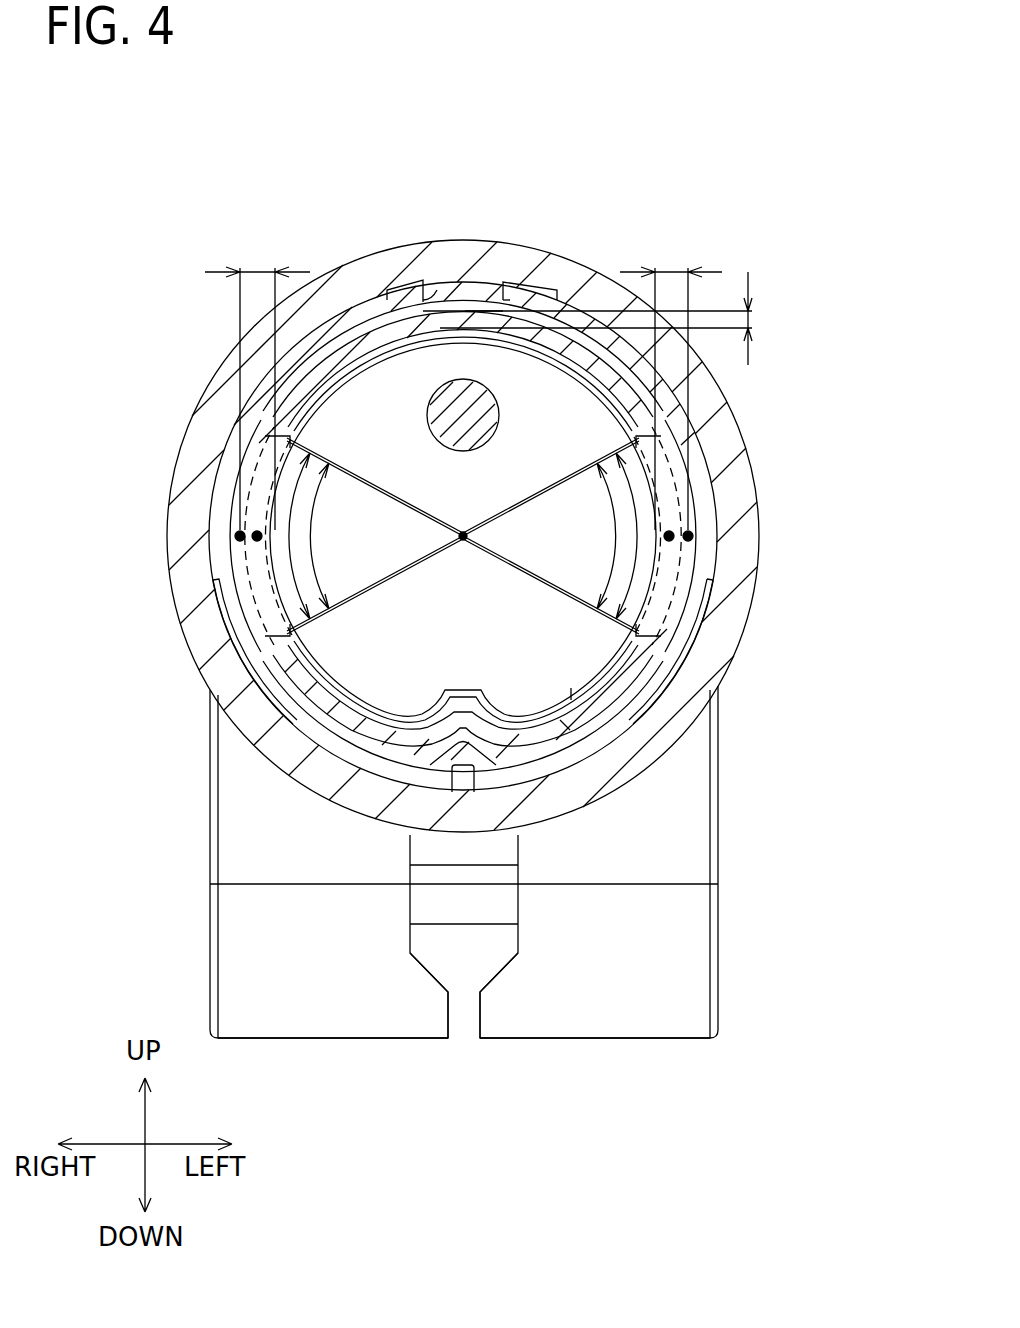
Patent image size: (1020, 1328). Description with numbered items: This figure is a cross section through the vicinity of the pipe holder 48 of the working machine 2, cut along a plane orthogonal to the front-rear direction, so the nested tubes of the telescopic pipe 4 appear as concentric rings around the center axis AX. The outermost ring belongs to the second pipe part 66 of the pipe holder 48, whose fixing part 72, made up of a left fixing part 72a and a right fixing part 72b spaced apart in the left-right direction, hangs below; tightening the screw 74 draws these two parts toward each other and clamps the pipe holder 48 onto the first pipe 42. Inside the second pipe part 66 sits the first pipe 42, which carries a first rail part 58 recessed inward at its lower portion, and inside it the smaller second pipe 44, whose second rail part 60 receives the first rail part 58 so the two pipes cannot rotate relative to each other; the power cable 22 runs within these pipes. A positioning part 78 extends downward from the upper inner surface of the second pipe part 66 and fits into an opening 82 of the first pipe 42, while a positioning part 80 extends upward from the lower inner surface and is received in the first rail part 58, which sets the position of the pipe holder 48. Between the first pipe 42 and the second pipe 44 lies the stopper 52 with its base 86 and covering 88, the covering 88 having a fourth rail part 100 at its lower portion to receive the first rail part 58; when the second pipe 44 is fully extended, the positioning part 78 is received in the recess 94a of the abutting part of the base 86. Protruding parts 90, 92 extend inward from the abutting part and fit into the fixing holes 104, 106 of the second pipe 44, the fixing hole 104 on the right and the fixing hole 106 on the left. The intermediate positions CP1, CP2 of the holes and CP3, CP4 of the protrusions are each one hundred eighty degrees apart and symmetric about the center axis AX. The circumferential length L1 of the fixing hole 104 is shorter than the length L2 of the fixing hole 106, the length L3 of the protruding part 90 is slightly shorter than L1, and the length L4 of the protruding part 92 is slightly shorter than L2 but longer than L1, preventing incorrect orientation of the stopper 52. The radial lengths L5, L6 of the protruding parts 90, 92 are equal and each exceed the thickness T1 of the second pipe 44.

The working machine 2 is at (114, 167).
The telescopic pipe 4 is at (154, 297).
The power cable 22 is at (447, 398).
The first pipe 42 is at (300, 715).
The second pipe 44 is at (300, 697).
The pipe holder 48 is at (445, 775).
The stopper 52 is at (563, 735).
The first rail part 58 is at (440, 755).
The second rail part 60 is at (440, 745).
The second pipe part 66 is at (410, 835).
The fixing part 72 is at (731, 1064).
The left fixing part 72a is at (597, 1030).
The right fixing part 72b is at (332, 1027).
The screw 74 is at (452, 912).
The positioning part 78 is at (460, 288).
The positioning part 80 is at (463, 822).
The opening 82 is at (497, 290).
The base 86 is at (575, 745).
The covering 88 is at (285, 655).
The protruding part 90 is at (245, 572).
The protruding part 92 is at (684, 572).
The recess 94a is at (437, 288).
The fourth rail part 100 is at (575, 688).
The fixing hole 104 is at (282, 440).
The fixing hole 106 is at (645, 437).
The center axis AX is at (463, 536).
The intermediate position CP1 is at (257, 536).
The intermediate position CP2 is at (688, 536).
The intermediate position CP3 is at (240, 536).
The intermediate position CP4 is at (669, 536).
The length of fixing hole 104 L1 is at (300, 532).
The length of fixing hole 106 L2 is at (626, 532).
The length of protruding part 90 L3 is at (300, 552).
The length of protruding part 92 L4 is at (626, 552).
The length of protruding part 90 L5 is at (257, 382).
The length of protruding part 92 L6 is at (671, 382).
The thickness of the second pipe T1 is at (616, 318).